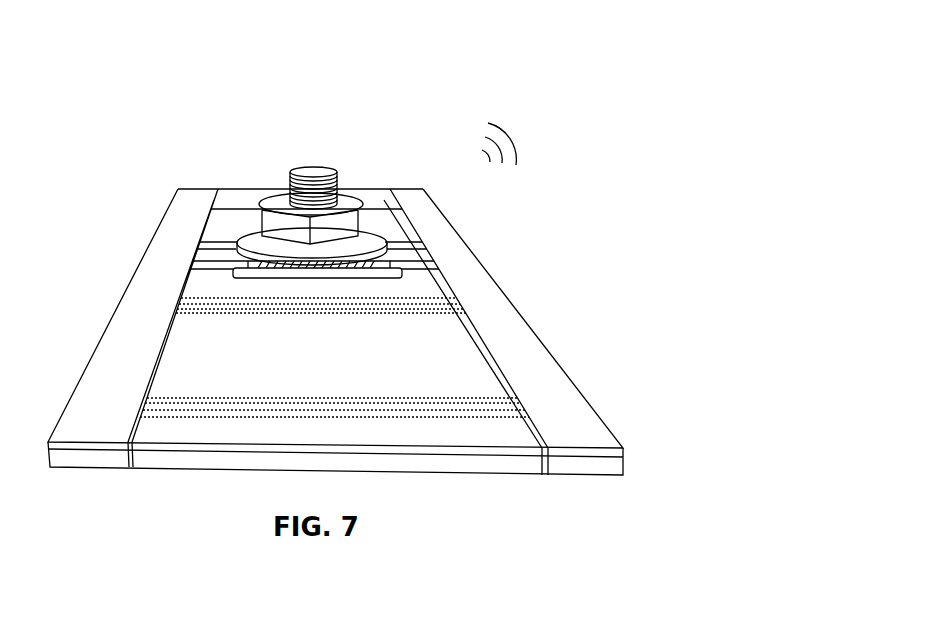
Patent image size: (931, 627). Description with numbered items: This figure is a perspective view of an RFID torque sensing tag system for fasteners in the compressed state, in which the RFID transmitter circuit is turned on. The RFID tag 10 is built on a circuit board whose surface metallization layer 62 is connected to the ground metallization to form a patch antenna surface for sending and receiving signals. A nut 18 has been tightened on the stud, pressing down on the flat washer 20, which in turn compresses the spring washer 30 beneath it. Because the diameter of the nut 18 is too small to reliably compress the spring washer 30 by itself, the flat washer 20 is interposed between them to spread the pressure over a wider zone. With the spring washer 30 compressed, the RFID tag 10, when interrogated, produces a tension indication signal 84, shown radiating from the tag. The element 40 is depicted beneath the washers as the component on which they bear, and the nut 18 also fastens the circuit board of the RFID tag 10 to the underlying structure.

The RFID tag 10 is at (535, 65).
The nut 18 is at (282, 197).
The flat washer 20 is at (377, 228).
The spring washer 30 is at (238, 232).
The base plate 40 is at (330, 274).
The surface metallization layer 62 is at (502, 425).
The tension indication signal 84 is at (507, 137).